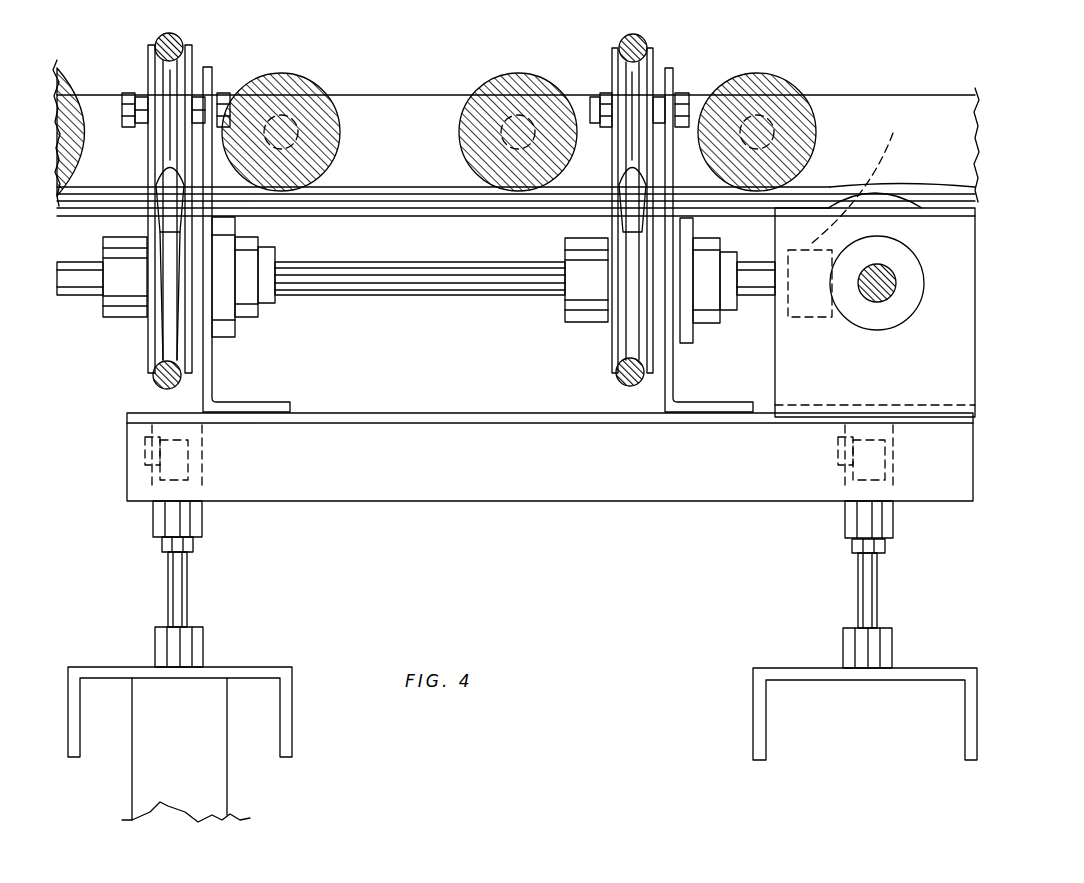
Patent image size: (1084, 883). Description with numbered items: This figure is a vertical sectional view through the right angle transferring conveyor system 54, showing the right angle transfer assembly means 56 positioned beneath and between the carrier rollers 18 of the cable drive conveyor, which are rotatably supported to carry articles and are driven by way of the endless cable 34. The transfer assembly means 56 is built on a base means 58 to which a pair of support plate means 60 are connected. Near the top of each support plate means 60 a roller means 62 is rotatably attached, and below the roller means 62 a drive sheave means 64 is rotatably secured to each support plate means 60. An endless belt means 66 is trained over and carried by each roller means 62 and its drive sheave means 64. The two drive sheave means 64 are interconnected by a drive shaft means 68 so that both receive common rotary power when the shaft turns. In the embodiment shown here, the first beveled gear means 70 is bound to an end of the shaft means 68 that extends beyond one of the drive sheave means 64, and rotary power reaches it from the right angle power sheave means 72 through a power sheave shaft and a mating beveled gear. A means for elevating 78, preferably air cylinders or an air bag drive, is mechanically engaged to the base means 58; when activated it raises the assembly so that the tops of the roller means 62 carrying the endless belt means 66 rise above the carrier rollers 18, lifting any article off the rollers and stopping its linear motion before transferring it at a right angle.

The carrier rollers 18 is at (799, 57).
The endless cable 34 is at (820, 192).
The right angle transferring conveyor system 54 is at (503, 62).
The right angle transfer assembly means 56 is at (433, 303).
The base means 58 is at (653, 473).
The support plate means 60 is at (203, 385).
The roller means 62 is at (175, 107).
The drive sheave means 64 is at (170, 297).
The endless belt means 66 is at (176, 38).
The drive shaft means 68 is at (402, 278).
The first beveled gear means 70 is at (858, 179).
The right angle power sheave means 72 is at (890, 203).
The means for elevating 78 is at (238, 785).